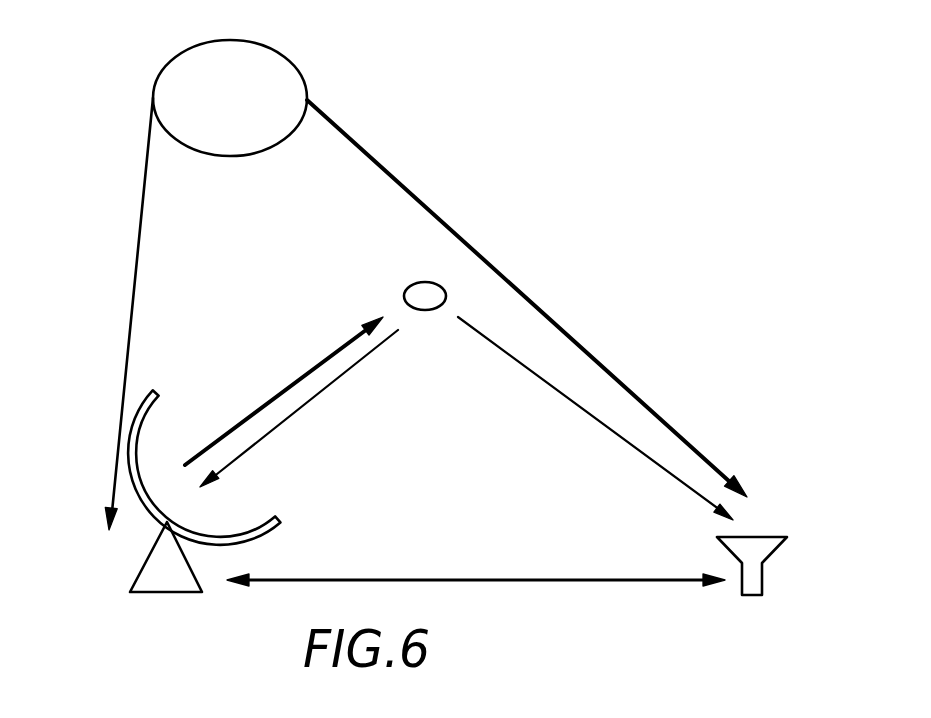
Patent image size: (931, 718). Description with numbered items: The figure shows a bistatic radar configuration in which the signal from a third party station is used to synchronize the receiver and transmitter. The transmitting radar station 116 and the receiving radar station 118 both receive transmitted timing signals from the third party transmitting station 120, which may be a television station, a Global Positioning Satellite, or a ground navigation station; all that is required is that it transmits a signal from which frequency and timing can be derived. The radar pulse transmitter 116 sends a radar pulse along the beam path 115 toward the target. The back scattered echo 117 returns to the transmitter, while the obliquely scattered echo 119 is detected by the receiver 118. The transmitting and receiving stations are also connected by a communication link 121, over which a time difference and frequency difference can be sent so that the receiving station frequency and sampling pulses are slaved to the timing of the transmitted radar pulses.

The beam path 115 is at (328, 357).
The transmitting radar station 116 is at (140, 574).
The back scattered echo 117 is at (290, 413).
The receiving radar station 118 is at (773, 537).
The obliquely scattered echo 119 is at (577, 405).
The third party transmitting station 120 is at (158, 72).
The communication link 121 is at (497, 580).